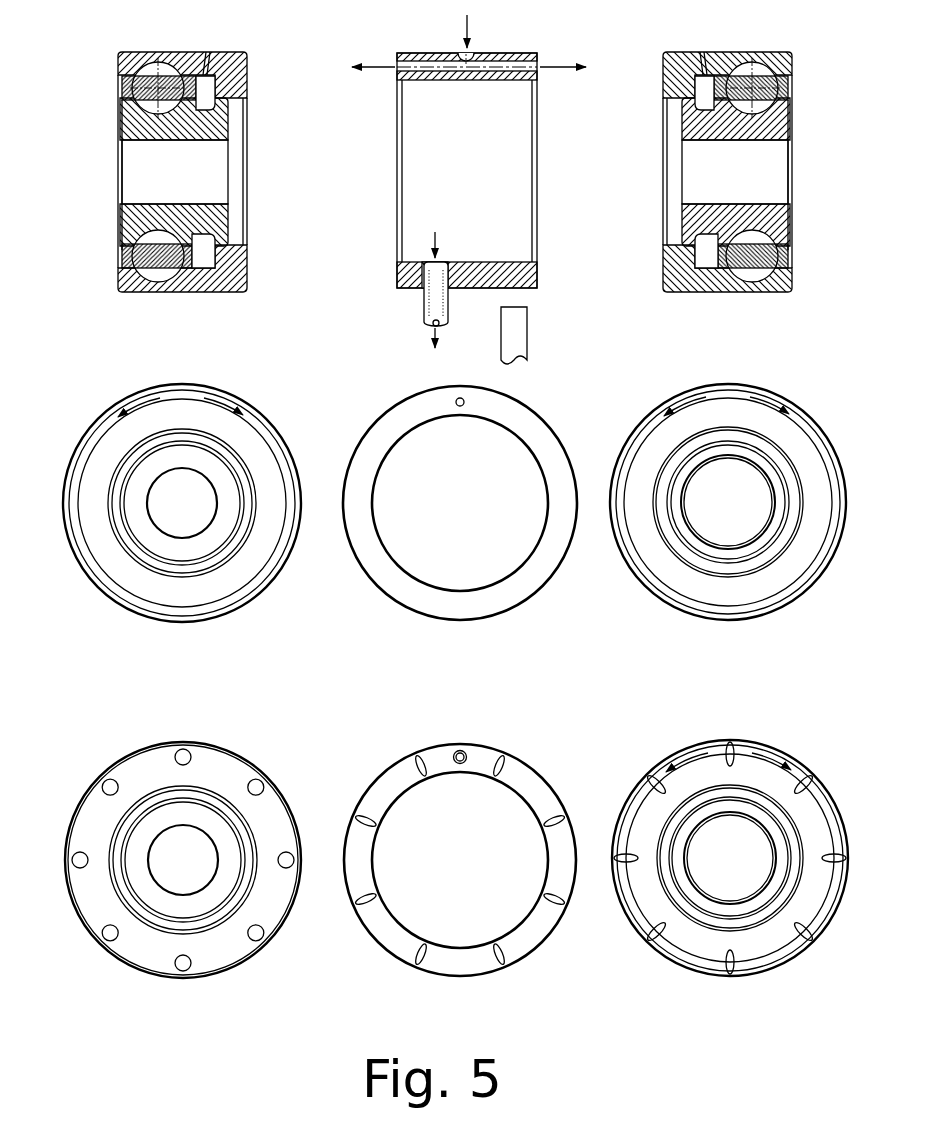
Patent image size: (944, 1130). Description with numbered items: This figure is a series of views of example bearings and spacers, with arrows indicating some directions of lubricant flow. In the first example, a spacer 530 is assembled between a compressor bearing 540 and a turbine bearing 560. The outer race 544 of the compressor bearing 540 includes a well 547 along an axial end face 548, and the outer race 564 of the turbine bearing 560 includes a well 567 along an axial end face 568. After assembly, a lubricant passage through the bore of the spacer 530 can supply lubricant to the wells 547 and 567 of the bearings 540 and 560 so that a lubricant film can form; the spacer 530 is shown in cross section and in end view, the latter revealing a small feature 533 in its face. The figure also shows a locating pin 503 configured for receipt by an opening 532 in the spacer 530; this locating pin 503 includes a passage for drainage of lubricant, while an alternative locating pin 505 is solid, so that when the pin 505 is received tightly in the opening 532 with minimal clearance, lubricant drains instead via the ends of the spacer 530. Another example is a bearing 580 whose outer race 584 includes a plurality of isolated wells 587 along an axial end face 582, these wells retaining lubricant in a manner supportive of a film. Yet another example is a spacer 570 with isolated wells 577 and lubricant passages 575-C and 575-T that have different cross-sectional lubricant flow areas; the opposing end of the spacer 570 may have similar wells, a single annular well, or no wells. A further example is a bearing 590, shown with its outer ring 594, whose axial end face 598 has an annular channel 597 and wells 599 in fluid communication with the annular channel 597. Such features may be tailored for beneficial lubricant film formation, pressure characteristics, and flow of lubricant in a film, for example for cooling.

The compressor bearing 540 is at (183, 327).
The outer race 544 is at (237, 57).
The axial end face 548 is at (265, 281).
The well 547 is at (180, 398).
The spacer 530 is at (462, 315).
The locating recess 533 is at (453, 68).
The opening 532 is at (451, 262).
The locating pin 503 is at (422, 303).
The locating pin 505 is at (528, 336).
The turbine bearing 560 is at (725, 324).
The outer race 564 is at (668, 58).
The axial end face 568 is at (655, 266).
The well 567 is at (728, 392).
The bearing 580 is at (174, 848).
The outer race 584 is at (246, 762).
The isolated wells 587 is at (185, 750).
The axial end face 582 is at (105, 972).
The spacer 570 is at (449, 824).
The lubricant passage 575-T is at (456, 752).
The lubricant passage 575-C is at (464, 751).
The isolated wells 577 is at (510, 762).
The bearing 590 is at (732, 841).
The outer ring of third bearing 594 is at (658, 765).
The annular channel 597 is at (718, 752).
The wells 599 is at (730, 746).
The axial end face 598 is at (797, 977).